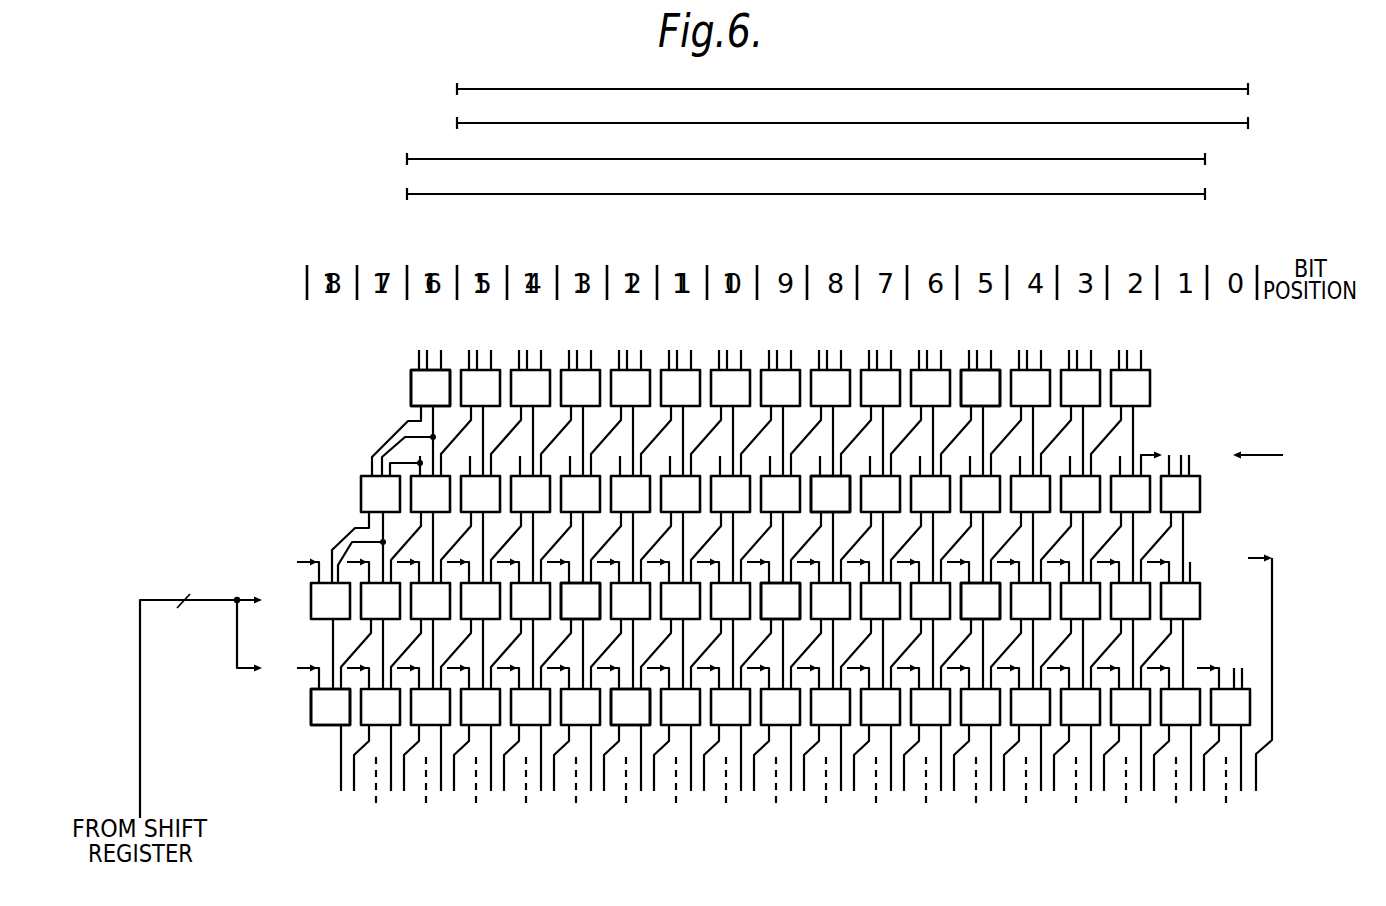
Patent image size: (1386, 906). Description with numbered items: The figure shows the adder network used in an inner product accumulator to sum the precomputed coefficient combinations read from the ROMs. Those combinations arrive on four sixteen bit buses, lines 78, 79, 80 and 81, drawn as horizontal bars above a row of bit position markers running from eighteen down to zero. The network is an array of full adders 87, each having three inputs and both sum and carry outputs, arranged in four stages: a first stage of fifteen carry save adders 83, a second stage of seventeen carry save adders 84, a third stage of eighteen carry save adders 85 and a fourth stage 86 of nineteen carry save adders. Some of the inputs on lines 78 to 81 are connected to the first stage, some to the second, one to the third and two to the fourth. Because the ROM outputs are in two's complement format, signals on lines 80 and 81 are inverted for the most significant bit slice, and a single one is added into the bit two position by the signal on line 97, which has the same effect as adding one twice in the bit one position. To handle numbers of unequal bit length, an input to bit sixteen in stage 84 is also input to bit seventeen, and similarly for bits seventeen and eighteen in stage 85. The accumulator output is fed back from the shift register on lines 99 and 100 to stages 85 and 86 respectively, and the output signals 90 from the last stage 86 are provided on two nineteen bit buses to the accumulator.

The line 78 is at (1207, 89).
The line 79 is at (1222, 123).
The line 80 is at (1187, 159).
The line 81 is at (1157, 194).
The first stage of carry save adders 83 is at (1180, 381).
The second stage of carry save adders 84 is at (1224, 500).
The third stage of carry save adders 85 is at (1284, 607).
The fourth stage of carry save adders 86 is at (1284, 717).
The full adder 87 is at (443, 401).
The output signals 90 is at (1038, 819).
The line 97 is at (1263, 455).
The line 99 is at (237, 597).
The line 100 is at (242, 674).